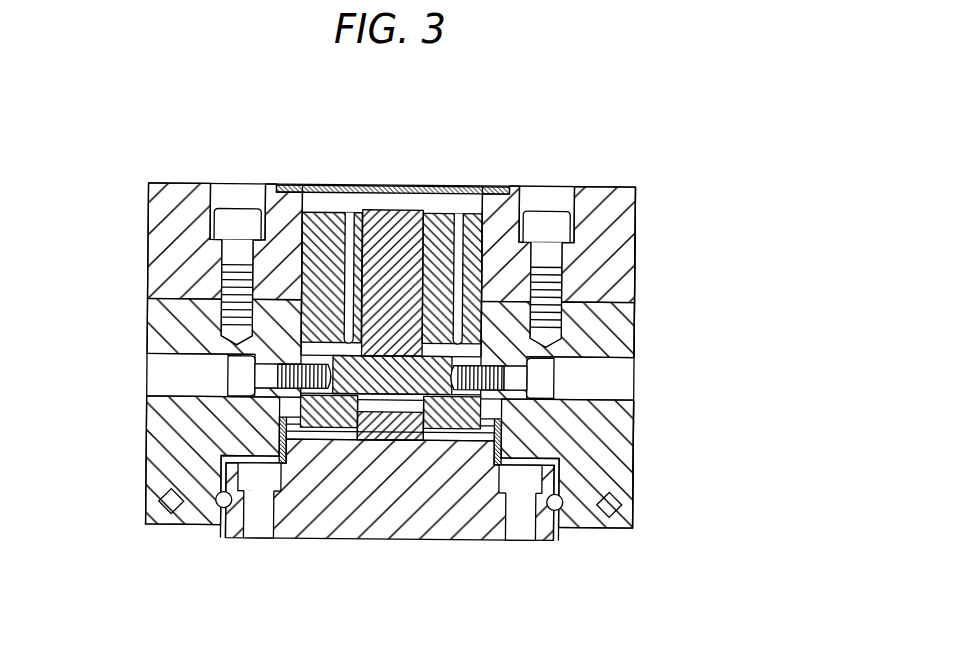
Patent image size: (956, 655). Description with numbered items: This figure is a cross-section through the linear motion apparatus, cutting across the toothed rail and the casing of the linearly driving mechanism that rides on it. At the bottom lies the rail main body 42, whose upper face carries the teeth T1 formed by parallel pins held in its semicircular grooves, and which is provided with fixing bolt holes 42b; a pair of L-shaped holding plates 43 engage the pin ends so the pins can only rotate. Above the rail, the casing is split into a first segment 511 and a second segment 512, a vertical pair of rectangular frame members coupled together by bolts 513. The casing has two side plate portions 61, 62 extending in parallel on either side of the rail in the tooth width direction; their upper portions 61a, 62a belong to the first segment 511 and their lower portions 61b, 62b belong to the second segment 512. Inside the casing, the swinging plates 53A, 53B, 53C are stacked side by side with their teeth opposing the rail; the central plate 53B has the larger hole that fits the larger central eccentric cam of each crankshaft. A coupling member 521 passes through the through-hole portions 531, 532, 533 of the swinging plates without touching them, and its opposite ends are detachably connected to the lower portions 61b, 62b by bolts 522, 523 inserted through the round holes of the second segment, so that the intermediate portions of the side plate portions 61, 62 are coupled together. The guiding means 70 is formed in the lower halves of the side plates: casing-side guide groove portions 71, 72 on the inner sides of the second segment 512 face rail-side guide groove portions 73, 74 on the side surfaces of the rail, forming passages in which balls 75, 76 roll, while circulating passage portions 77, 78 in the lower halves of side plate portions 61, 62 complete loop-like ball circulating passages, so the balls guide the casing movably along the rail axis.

The guiding means 70 is at (178, 545).
The casing-side guide groove portion 71 is at (176, 523).
The casing-side guide groove portion 72 is at (566, 497).
The rail-side guide groove portion 73 is at (236, 512).
The rail-side guide groove portion 74 is at (538, 495).
The ball 75 is at (218, 507).
The ball 76 is at (557, 512).
The circulating passage portion 77 is at (166, 494).
The circulating passage portion 78 is at (626, 510).
The side plate portion 61 is at (186, 190).
The upper portion of side plate portion 61a is at (167, 237).
The lower portion of side plate portion 61b is at (167, 430).
The side plate portion 62 is at (617, 203).
The upper portion of side plate portion 62a is at (628, 213).
The lower portion of side plate portion 62b is at (628, 333).
The first segment 511 is at (637, 257).
The second segment 512 is at (635, 446).
The bolt 513 is at (243, 220).
The coupling member 521 is at (367, 380).
The bolt 522 is at (237, 377).
The bolt 523 is at (537, 380).
The through-hole portion 531 is at (333, 213).
The through-hole portion 533 is at (470, 213).
The swinging plate 53A is at (348, 213).
The swinging plate 53B is at (407, 213).
The swinging plate 53C is at (457, 213).
The rail main body 42 is at (290, 512).
The fixing bolt hole 42b is at (510, 523).
The holding plate 43 is at (512, 441).
The through-hole portion 532 is at (381, 405).
The teeth T1 is at (463, 435).